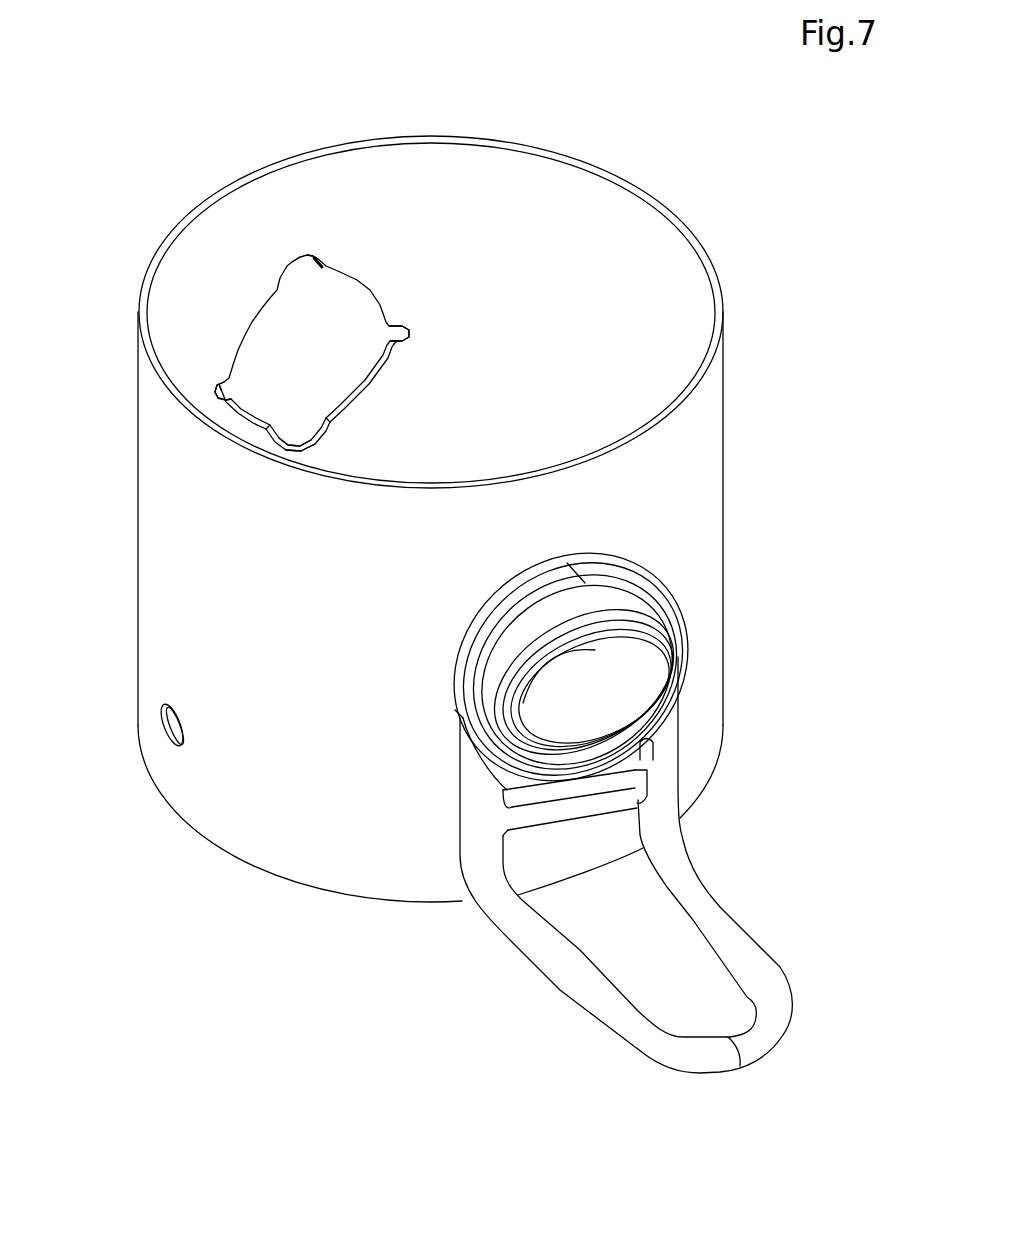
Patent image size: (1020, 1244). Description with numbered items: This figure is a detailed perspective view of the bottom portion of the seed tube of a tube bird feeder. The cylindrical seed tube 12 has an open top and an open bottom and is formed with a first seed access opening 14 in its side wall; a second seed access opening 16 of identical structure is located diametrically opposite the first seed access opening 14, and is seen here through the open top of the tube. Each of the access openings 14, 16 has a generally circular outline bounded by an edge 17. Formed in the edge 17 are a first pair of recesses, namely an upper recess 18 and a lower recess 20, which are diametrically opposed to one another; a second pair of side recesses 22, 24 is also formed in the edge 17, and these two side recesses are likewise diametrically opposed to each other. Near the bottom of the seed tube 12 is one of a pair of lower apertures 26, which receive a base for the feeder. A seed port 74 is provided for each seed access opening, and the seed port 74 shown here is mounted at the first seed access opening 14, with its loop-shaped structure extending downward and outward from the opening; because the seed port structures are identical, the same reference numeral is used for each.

The seed tube 12 is at (360, 678).
The first seed access opening 14 is at (590, 669).
The second seed access opening 16 is at (370, 276).
The edge 17 is at (370, 382).
The upper recess 18 is at (312, 246).
The lower recess 20 is at (332, 438).
The side recess 22 is at (423, 326).
The side recess 24 is at (215, 375).
The lower aperture 26 is at (165, 744).
The seed port 74 is at (736, 857).